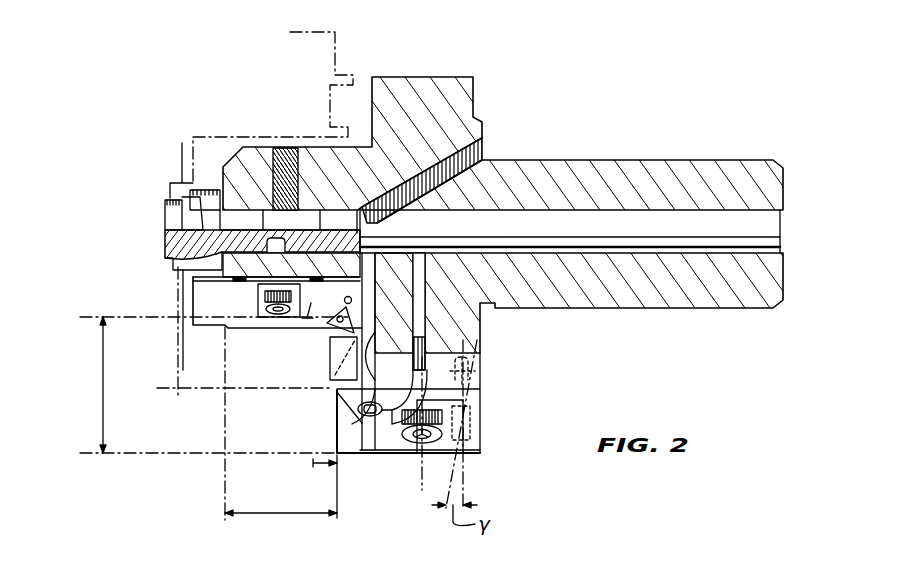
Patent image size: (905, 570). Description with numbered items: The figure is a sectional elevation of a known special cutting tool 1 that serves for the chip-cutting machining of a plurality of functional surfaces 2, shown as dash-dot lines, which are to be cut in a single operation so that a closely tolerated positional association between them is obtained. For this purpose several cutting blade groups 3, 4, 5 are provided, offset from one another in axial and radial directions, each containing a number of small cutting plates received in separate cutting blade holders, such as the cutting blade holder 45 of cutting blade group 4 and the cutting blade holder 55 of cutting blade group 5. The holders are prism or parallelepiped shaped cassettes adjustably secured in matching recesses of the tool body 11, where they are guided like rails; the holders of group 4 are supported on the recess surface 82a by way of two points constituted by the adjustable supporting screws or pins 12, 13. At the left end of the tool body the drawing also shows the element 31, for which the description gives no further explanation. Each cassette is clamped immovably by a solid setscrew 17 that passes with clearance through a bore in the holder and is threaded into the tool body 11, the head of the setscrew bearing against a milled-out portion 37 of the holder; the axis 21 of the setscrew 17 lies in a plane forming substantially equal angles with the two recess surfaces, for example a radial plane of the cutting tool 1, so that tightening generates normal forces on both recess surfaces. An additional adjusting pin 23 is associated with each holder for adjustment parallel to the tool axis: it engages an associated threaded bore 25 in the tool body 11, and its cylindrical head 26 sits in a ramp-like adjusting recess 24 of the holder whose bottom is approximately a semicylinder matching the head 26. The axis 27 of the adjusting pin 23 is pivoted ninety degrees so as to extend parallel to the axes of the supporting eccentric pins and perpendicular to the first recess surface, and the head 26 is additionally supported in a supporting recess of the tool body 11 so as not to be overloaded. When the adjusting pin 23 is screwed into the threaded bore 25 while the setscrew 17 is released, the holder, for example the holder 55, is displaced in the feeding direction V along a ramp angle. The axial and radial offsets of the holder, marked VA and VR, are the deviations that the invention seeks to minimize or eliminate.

The cutting tool 1 is at (570, 144).
The functional surfaces 2 is at (338, 63).
The cutting blade group 3 is at (156, 202).
The cutting blade group 4 is at (327, 325).
The cutting blade group 5 is at (333, 414).
The tool body 11 is at (645, 168).
The supporting screw 12 is at (245, 280).
The supporting screw 13 is at (378, 236).
The setscrew 17 is at (420, 438).
The axis of setscrew 21 is at (422, 474).
The adjusting pin 23 is at (473, 376).
The adjusting recess 24 is at (332, 352).
The threaded bore 25 is at (489, 364).
The head of adjusting pin 26 is at (478, 412).
The axis of adjusting pin 27 is at (453, 348).
The clamping nut 31 is at (168, 250).
The milled-out portion 37 is at (438, 408).
The cutting blade holder 45 is at (233, 307).
The cutting blade holder 55 is at (367, 453).
The recess surface 82a is at (262, 290).
The feeding direction V is at (335, 464).
The axial offset VA is at (278, 512).
The radial offset VR is at (103, 403).